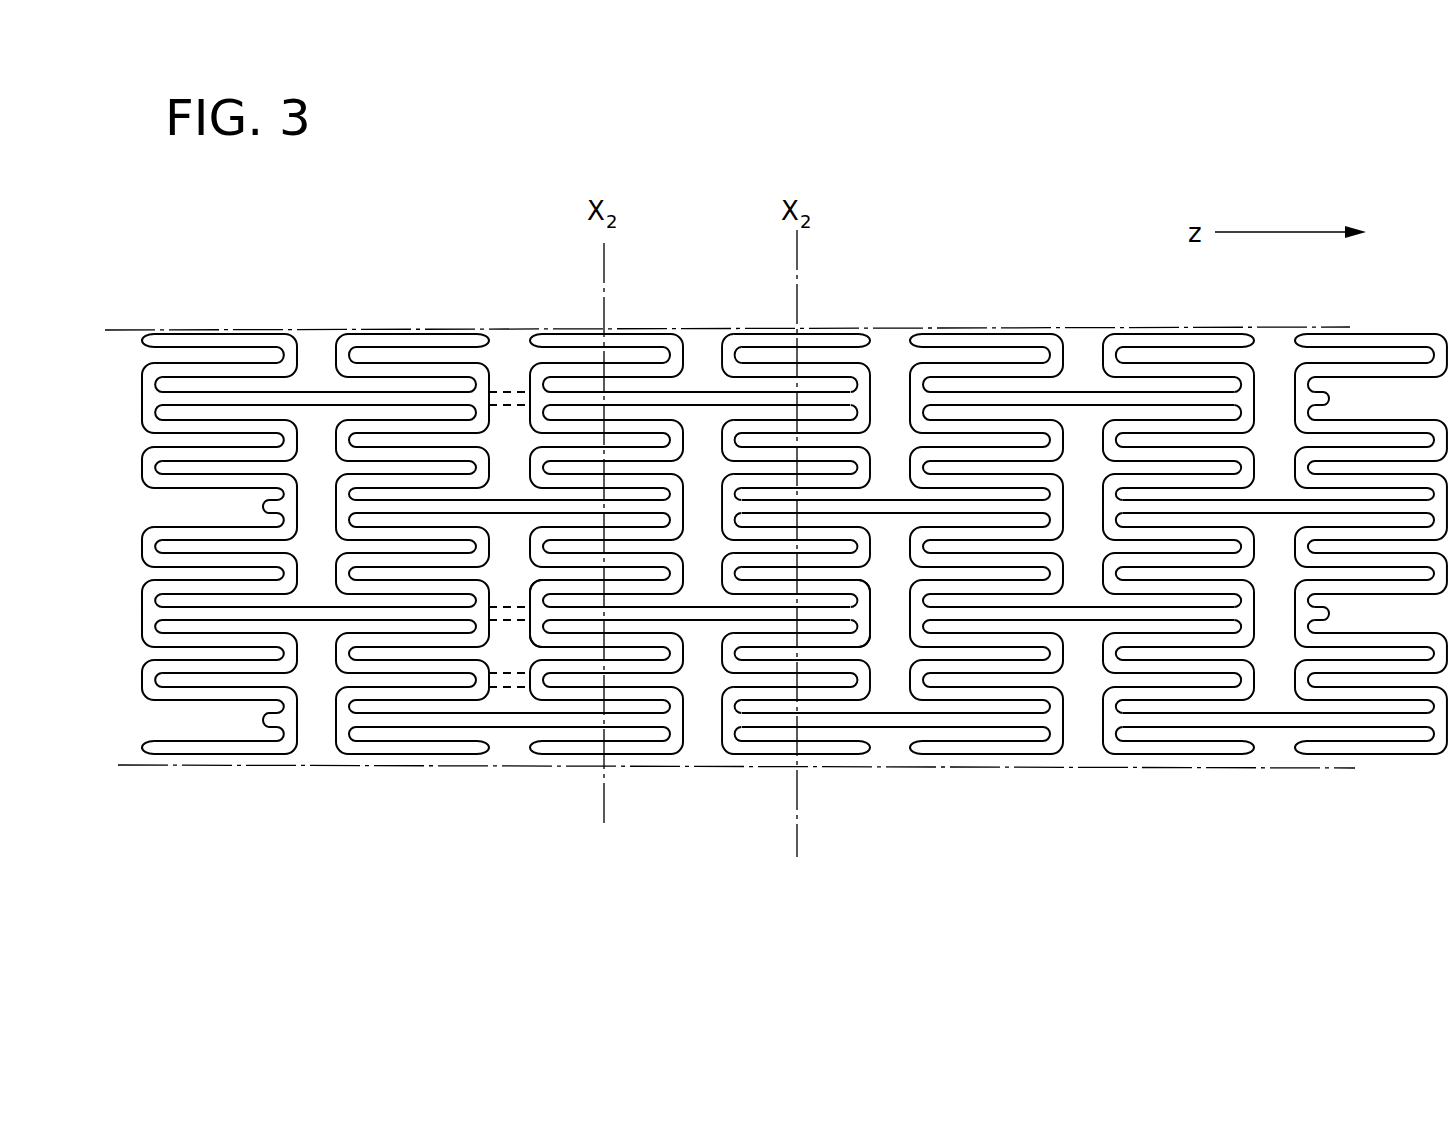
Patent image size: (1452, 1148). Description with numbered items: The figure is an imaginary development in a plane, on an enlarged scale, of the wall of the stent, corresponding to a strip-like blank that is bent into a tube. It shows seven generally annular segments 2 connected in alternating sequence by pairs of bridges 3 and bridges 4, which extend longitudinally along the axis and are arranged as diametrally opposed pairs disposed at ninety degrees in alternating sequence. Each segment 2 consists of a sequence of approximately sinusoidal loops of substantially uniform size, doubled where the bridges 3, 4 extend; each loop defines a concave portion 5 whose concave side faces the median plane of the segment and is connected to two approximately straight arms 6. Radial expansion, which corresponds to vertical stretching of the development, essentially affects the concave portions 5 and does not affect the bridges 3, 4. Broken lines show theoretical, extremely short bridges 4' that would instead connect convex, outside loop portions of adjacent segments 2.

The segment 2 is at (168, 783).
The bridge 3 is at (315, 400).
The bridge 4 is at (891, 551).
The bridge 4' is at (500, 454).
The concave portion 5 is at (870, 584).
The arm 6 is at (420, 640).